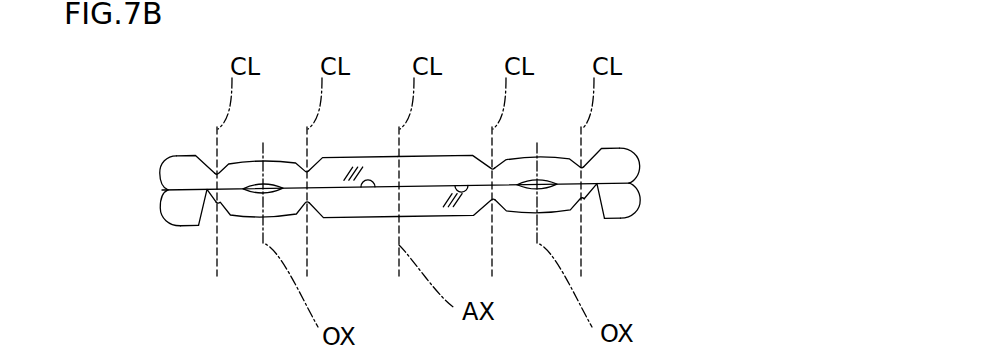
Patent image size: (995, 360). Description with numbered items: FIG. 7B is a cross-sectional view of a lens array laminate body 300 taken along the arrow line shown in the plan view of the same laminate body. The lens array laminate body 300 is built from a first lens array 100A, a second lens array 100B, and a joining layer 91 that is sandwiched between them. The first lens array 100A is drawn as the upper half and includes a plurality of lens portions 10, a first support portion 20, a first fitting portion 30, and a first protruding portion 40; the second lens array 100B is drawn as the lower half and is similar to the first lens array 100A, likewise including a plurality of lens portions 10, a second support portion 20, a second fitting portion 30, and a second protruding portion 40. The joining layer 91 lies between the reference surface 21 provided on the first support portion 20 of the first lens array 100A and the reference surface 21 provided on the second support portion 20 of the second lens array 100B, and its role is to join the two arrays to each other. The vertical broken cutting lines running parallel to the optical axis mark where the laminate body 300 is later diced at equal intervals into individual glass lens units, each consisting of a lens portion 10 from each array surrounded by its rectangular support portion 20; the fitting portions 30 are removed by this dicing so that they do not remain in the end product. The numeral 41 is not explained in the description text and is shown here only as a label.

The lens array laminate body 300 is at (700, 97).
The first lens array 100A is at (645, 170).
The second lens array 100B is at (640, 198).
The lens portion 10 is at (278, 167).
The support portion 20 is at (322, 180).
The fitting portion 30 is at (412, 167).
The reference surface 21 is at (469, 184).
The protruding portion 40 is at (168, 173).
The flange portion 41 is at (183, 168).
The joining layer 91 is at (207, 195).